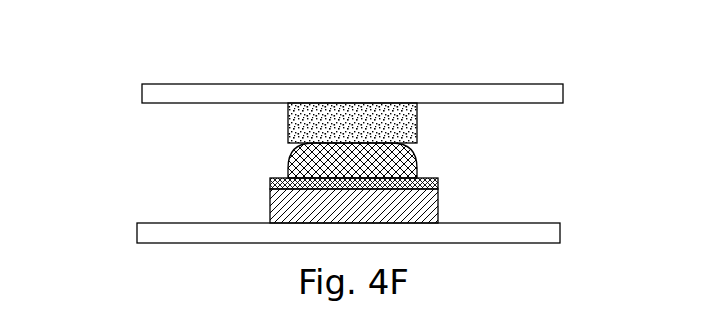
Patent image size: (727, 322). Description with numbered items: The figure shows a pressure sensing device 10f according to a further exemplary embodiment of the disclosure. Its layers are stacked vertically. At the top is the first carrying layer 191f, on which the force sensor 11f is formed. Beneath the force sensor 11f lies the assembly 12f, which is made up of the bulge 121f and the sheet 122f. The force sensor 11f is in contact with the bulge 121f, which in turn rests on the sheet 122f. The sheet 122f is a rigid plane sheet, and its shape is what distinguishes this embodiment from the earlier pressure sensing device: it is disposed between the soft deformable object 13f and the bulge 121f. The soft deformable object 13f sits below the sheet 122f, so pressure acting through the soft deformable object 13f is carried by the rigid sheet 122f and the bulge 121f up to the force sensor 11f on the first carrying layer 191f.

The pressure sensing device 10f is at (390, 32).
The first carrying layer 191f is at (142, 84).
The force sensor 11f is at (418, 126).
The pressure transmitting structure 12f is at (423, 162).
The bulge 121f is at (416, 165).
The sheet 122f is at (438, 180).
The soft deformable object 13f is at (271, 212).